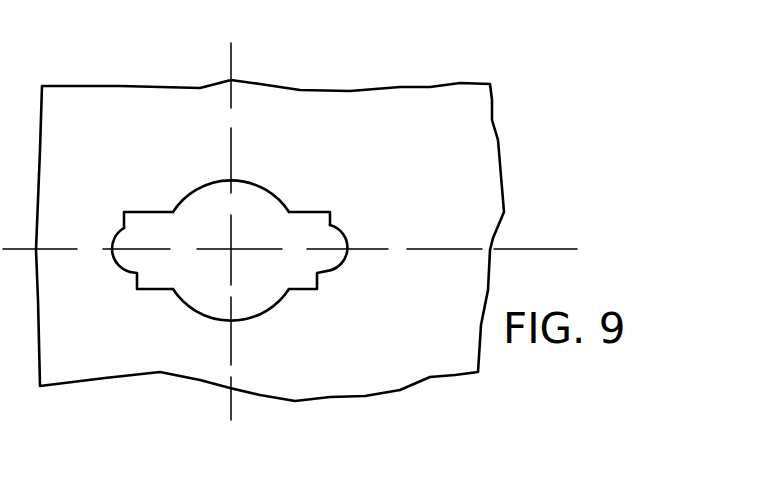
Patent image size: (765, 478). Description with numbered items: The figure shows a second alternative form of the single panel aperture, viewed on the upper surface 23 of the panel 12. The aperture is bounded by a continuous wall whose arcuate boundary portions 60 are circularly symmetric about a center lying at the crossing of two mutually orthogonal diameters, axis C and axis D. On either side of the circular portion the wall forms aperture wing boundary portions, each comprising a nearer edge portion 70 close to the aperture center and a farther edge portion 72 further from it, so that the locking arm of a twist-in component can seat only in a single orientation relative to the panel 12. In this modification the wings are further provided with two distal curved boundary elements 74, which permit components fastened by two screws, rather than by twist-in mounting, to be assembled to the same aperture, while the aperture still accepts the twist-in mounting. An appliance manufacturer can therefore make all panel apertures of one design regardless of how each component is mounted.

The panel 12 is at (411, 80).
The upper surface 23 is at (449, 128).
The arcuate boundary portions 60 is at (245, 181).
The nearer edge portion 70 is at (137, 277).
The farther edge portion 72 is at (124, 224).
The distal curved boundary elements 74 is at (119, 265).
The axis D is at (231, 62).
The axis C is at (543, 249).